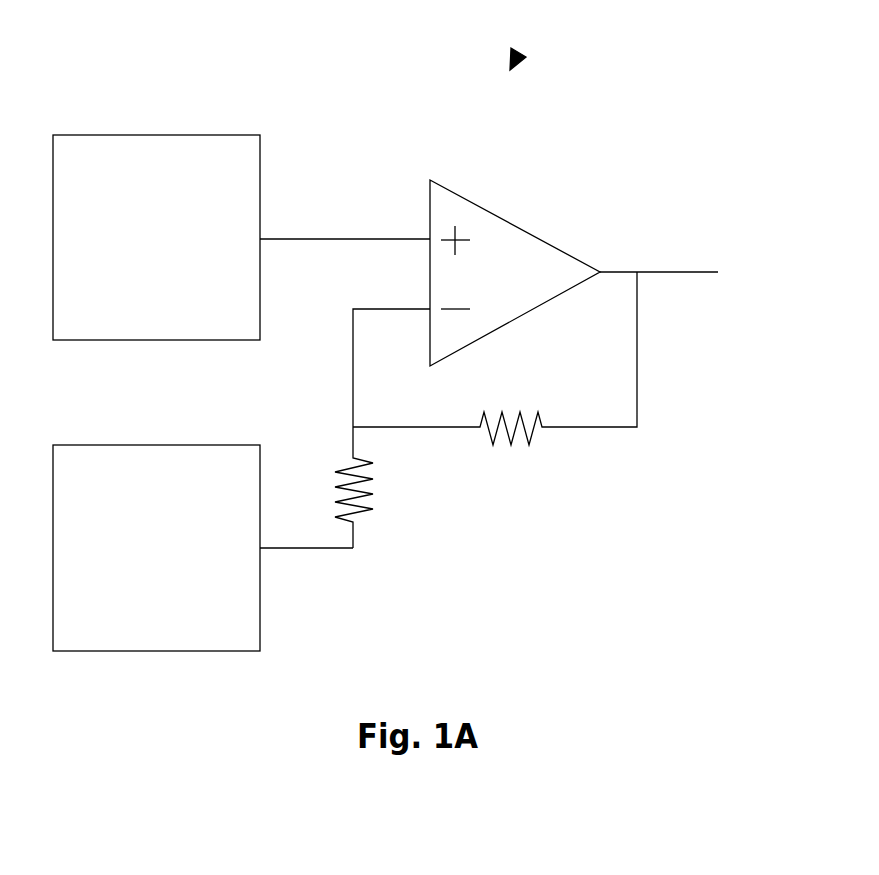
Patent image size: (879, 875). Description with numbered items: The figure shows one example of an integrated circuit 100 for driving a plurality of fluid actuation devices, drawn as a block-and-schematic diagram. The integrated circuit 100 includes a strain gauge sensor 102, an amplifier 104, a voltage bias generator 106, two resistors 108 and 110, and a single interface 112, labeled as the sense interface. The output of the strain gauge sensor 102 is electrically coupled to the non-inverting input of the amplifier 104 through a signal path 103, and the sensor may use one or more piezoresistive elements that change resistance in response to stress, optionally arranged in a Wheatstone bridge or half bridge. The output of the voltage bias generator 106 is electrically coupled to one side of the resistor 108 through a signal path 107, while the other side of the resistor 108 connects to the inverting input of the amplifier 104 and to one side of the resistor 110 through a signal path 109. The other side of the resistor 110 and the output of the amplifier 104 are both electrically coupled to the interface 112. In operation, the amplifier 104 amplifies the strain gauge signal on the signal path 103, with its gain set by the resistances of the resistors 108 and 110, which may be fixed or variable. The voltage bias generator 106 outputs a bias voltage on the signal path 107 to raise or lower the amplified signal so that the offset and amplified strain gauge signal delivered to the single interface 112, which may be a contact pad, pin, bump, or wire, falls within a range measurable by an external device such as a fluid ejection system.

The integrated circuit 100 is at (518, 50).
The strain gauge sensor 102 is at (202, 135).
The signal path 103 is at (318, 239).
The amplifier 104 is at (515, 226).
The voltage bias generator 106 is at (202, 445).
The signal path 107 is at (278, 548).
The resistor 108 is at (358, 513).
The signal path 109 is at (353, 376).
The resistor 110 is at (529, 413).
The single interface 112 is at (668, 272).